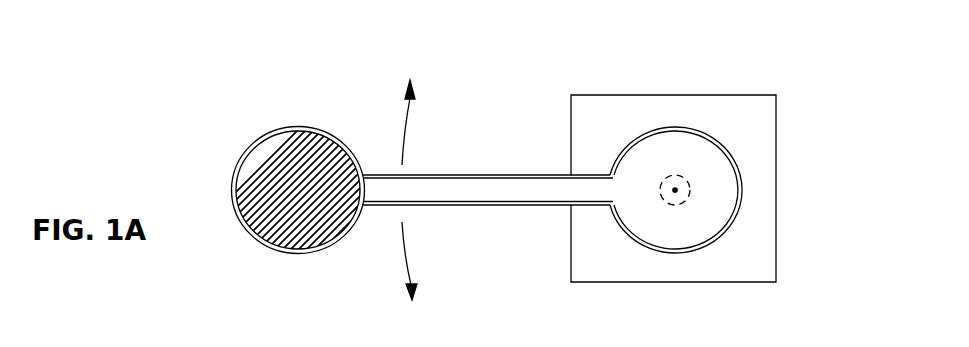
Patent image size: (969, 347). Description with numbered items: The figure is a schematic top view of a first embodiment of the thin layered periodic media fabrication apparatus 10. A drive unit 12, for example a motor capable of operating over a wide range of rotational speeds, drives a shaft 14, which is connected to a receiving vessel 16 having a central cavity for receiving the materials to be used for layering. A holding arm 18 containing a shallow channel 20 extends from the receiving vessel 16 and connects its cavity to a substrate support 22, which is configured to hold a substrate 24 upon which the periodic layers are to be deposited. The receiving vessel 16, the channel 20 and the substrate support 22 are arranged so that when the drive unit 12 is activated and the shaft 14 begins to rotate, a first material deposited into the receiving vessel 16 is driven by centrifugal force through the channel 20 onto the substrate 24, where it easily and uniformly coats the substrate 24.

The fabrication apparatus 10 is at (232, 65).
The drive unit 12 is at (708, 93).
The shaft 14 is at (690, 188).
The receiving vessel 16 is at (742, 190).
The holding arm 18 is at (465, 175).
The channel 20 is at (437, 190).
The substrate support 22 is at (297, 253).
The substrate 24 is at (313, 172).